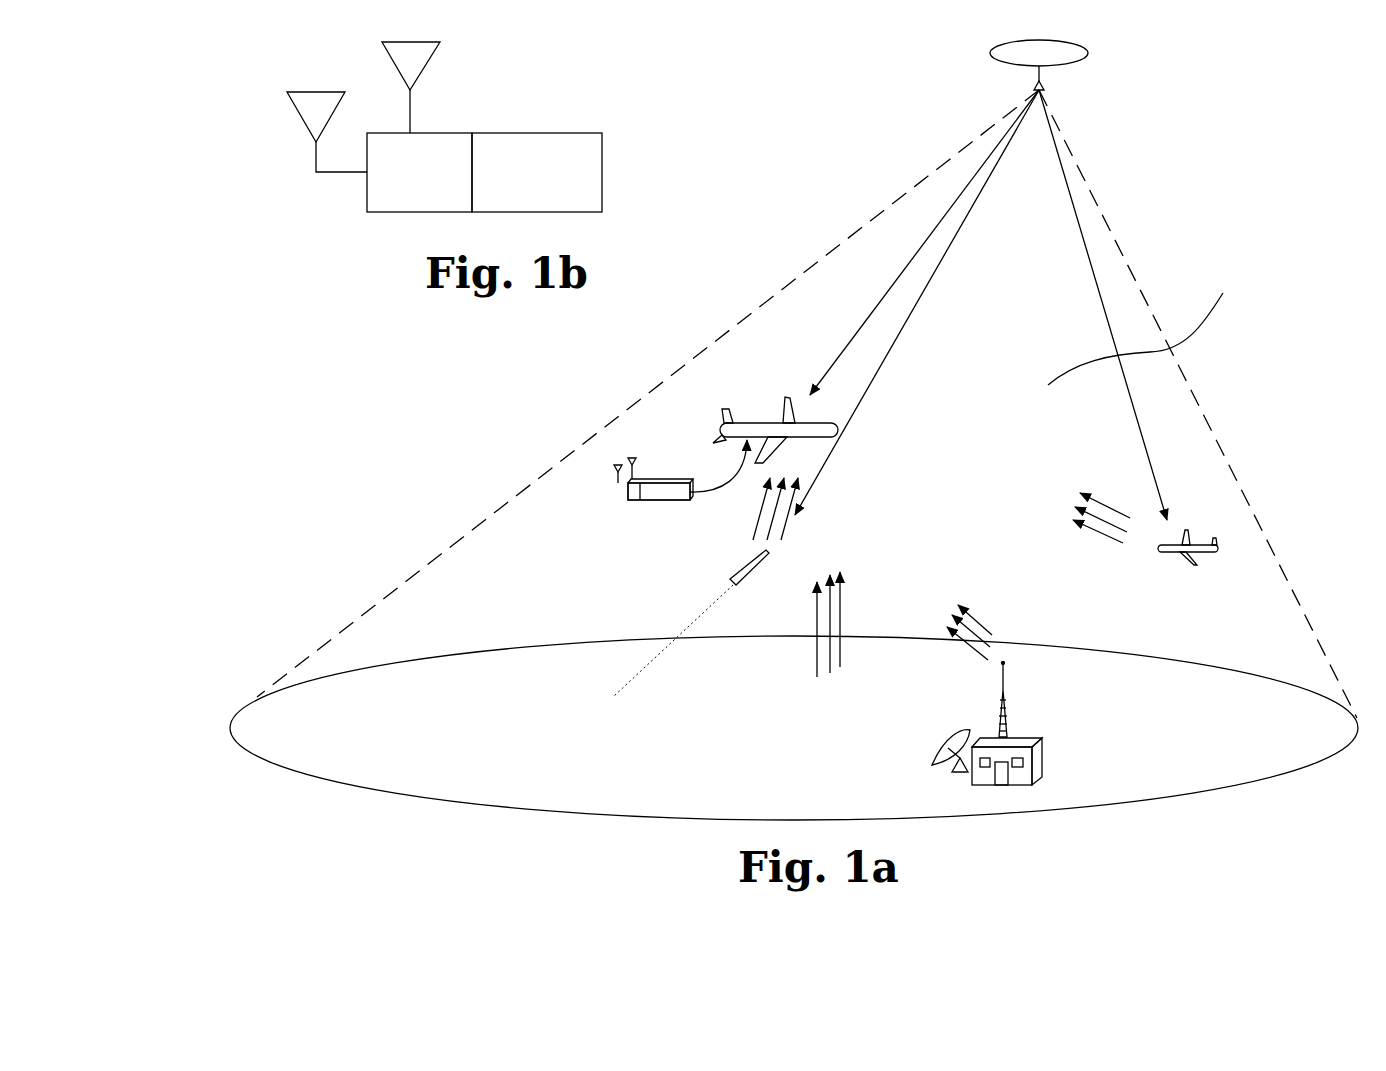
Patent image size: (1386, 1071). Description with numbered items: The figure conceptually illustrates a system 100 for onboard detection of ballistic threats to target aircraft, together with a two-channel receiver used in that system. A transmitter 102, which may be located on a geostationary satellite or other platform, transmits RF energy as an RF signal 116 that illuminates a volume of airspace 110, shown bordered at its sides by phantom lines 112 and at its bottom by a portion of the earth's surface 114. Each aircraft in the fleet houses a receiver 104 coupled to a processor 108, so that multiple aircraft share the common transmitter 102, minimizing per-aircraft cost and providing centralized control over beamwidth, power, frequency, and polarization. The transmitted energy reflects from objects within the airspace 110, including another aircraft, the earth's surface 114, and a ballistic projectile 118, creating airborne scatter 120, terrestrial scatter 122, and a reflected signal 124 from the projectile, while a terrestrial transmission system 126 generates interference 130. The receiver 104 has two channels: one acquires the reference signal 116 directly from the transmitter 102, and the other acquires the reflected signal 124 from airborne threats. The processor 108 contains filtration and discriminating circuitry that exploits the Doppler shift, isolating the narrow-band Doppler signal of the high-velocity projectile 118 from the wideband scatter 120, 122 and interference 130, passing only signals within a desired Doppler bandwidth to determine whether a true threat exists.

In FIG. 1A, the system 100 is at (816, 44).
In FIG. 1A, the transmitter 102 is at (1072, 65).
In FIG. 1B, the receiver 104 is at (387, 212).
In FIG. 1A, the receiver 104 is at (625, 488).
In FIG. 1B, the processor 108 is at (535, 133).
In FIG. 1A, the processor 108 is at (662, 503).
In FIG. 1A, the airspace 110 is at (1148, 328).
In FIG. 1A, the phantom lines 112 is at (420, 570).
In FIG. 1A, the earth's surface 114 is at (702, 715).
In FIG. 1A, the RF signal 116 is at (880, 302).
In FIG. 1A, the ballistic projectile 118 is at (750, 575).
In FIG. 1A, the airborne scatter 120 is at (1107, 507).
In FIG. 1A, the terrestrial scatter 122 is at (842, 625).
In FIG. 1A, the reflected signal 124 is at (758, 513).
In FIG. 1A, the terrestrial transmission system 126 is at (1043, 765).
In FIG. 1A, the interference 130 is at (975, 652).